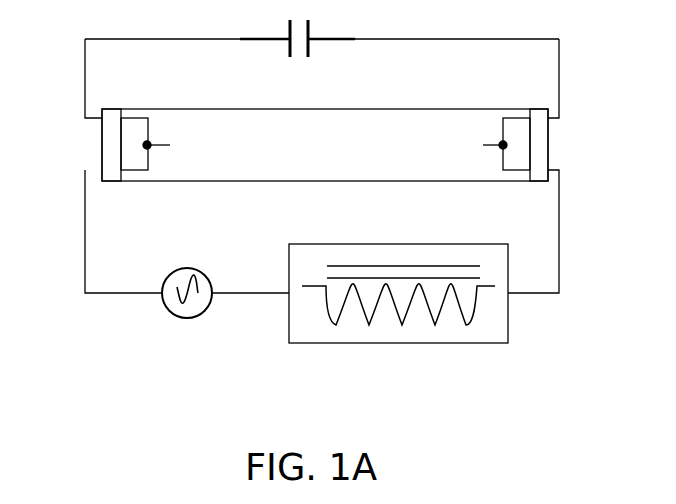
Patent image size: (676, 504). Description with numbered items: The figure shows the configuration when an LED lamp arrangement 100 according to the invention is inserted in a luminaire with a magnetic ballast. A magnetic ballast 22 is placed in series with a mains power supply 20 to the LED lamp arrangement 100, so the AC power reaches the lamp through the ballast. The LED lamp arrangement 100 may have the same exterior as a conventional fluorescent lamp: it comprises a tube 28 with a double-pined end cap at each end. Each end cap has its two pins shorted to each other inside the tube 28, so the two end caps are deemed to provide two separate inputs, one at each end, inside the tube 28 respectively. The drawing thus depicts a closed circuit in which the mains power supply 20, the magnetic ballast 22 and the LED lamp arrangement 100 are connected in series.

The mains power supply 20 is at (188, 315).
The magnetic ballast 22 is at (445, 245).
The tube 28 is at (325, 119).
The LED lamp arrangement 100 is at (333, 158).